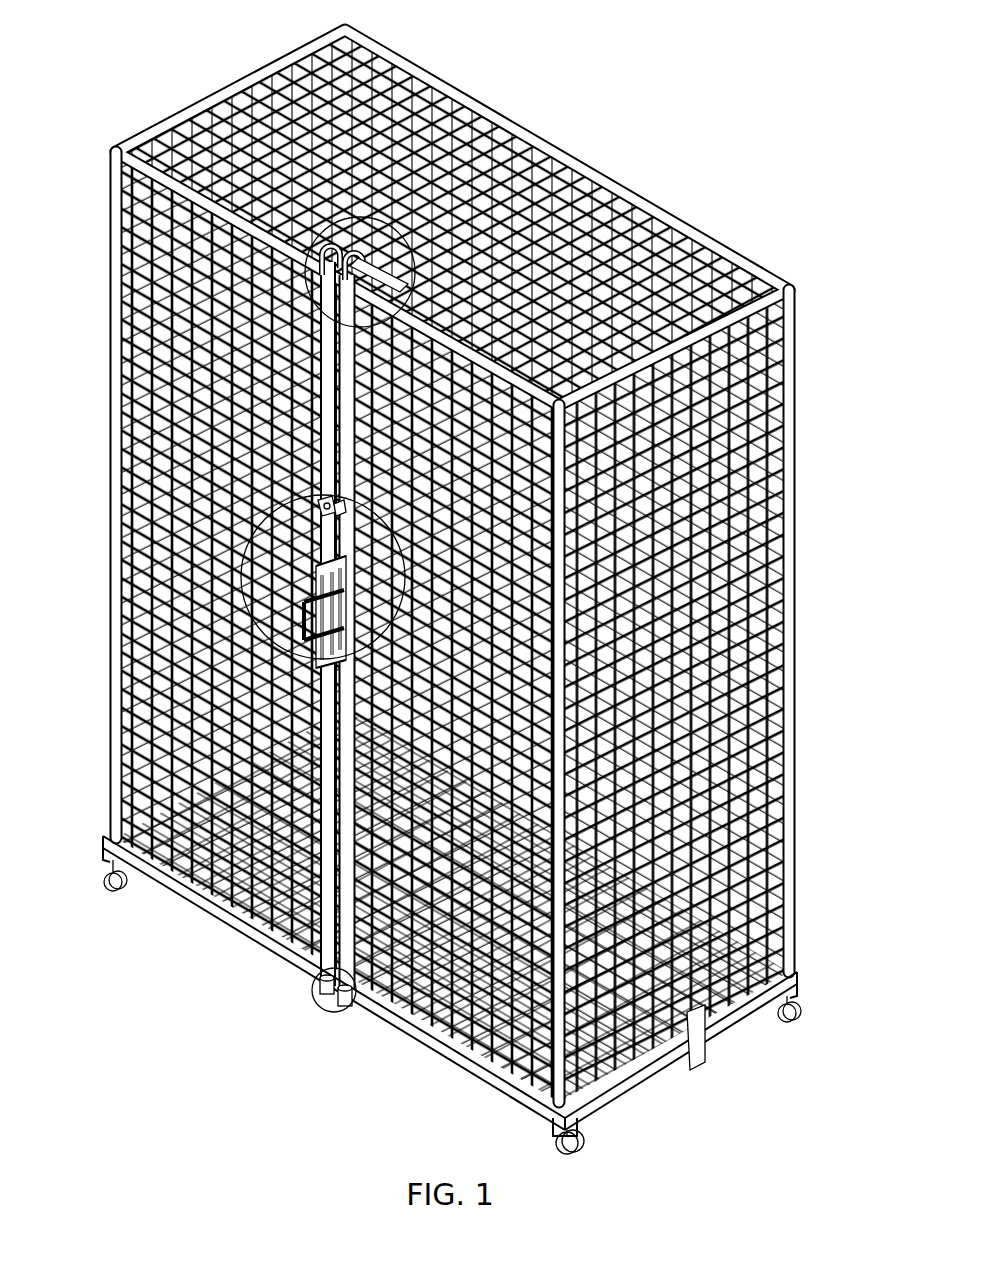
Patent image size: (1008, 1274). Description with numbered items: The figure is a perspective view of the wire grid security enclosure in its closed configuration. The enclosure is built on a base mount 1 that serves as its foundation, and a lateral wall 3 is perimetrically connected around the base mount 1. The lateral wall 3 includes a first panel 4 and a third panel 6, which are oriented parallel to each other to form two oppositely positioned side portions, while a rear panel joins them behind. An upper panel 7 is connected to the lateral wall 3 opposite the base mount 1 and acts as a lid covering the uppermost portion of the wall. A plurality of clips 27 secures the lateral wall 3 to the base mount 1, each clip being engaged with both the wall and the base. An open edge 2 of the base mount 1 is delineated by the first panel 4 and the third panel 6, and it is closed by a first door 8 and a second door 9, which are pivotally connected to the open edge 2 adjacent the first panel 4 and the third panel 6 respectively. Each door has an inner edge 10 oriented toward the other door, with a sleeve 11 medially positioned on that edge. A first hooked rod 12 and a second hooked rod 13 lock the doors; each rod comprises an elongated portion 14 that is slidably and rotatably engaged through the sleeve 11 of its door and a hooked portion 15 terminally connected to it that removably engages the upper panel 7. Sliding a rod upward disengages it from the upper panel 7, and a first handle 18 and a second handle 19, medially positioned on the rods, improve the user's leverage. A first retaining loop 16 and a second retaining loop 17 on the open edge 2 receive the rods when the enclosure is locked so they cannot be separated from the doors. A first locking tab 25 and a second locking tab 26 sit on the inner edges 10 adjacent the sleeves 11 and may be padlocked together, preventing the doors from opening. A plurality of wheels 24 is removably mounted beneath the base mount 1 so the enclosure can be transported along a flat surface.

The base mount 1 is at (640, 1128).
The open edge 2 is at (420, 1030).
The lateral wall 3 is at (800, 566).
The first panel 4 is at (222, 94).
The third panel 6 is at (540, 144).
The upper panel 7 is at (462, 98).
The first door 8 is at (222, 897).
The second door 9 is at (518, 1068).
The inner edge 10 is at (328, 945).
The sleeve 11 is at (312, 565).
The first hooked rod 12 is at (322, 745).
The second hooked rod 13 is at (345, 778).
The elongated portion 14 is at (318, 407).
The hooked portion 15 is at (338, 248).
The first retaining loop 16 is at (322, 992).
The second retaining loop 17 is at (345, 1002).
The first handle 18 is at (300, 648).
The second handle 19 is at (340, 700).
The plurality of wheels 24 is at (108, 890).
The first locking tab 25 is at (322, 500).
The second locking tab 26 is at (340, 507).
The plurality of clips 27 is at (703, 1058).